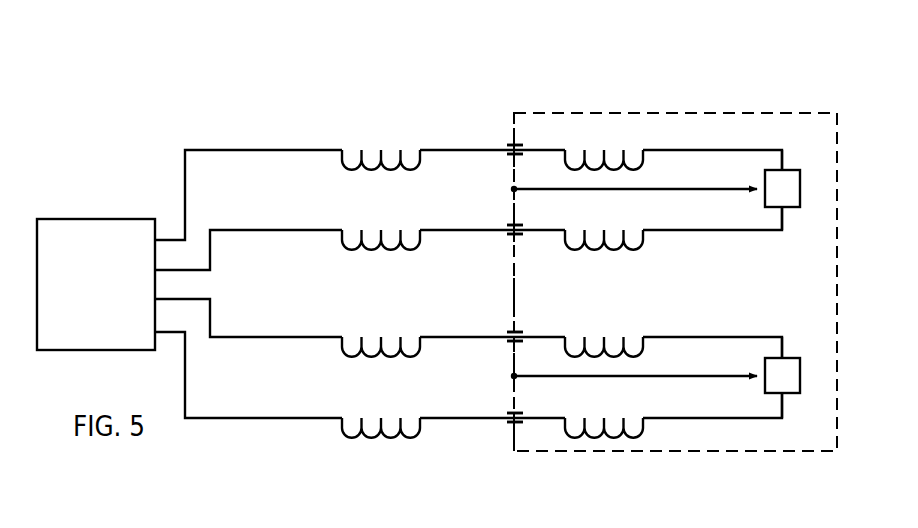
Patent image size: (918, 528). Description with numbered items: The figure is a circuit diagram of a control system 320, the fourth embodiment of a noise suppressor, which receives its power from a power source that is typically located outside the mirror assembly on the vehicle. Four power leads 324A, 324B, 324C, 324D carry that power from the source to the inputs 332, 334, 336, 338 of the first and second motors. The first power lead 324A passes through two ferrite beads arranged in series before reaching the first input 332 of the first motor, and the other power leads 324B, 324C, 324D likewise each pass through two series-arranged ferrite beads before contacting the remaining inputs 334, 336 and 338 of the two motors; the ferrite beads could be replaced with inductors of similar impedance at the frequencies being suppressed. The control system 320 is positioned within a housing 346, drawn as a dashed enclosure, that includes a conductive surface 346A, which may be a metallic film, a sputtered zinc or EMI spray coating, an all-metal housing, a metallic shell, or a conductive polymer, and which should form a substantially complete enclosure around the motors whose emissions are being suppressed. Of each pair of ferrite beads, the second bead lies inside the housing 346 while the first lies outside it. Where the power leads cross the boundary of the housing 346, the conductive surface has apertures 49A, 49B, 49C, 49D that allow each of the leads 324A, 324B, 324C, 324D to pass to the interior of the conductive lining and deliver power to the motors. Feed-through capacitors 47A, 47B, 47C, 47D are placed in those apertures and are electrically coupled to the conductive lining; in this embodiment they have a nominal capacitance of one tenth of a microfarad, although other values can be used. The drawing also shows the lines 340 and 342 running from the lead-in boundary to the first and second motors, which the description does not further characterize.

The control system 320 is at (170, 72).
The power lead 324A is at (290, 150).
The power lead 324B is at (290, 230).
The power lead 324C is at (300, 337).
The power lead 324D is at (290, 418).
The feed-through capacitor 47A is at (509, 146).
The feed-through capacitor 47B is at (519, 235).
The feed-through capacitor 47C is at (510, 341).
The feed-through capacitor 47D is at (510, 424).
The aperture 49A is at (514, 143).
The aperture 49B is at (513, 225).
The aperture 49C is at (511, 330).
The aperture 49D is at (512, 412).
The housing 346 is at (576, 104).
The conductive surface 346A is at (670, 113).
The input 332 is at (783, 160).
The input 334 is at (783, 213).
The input 336 is at (783, 345).
The input 338 is at (783, 398).
The M1 control line 340 is at (760, 184).
The M2 control line 342 is at (760, 371).